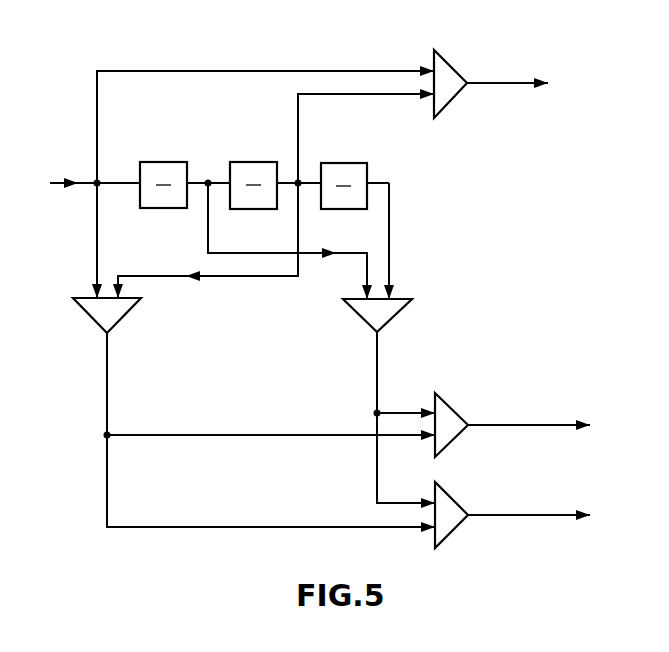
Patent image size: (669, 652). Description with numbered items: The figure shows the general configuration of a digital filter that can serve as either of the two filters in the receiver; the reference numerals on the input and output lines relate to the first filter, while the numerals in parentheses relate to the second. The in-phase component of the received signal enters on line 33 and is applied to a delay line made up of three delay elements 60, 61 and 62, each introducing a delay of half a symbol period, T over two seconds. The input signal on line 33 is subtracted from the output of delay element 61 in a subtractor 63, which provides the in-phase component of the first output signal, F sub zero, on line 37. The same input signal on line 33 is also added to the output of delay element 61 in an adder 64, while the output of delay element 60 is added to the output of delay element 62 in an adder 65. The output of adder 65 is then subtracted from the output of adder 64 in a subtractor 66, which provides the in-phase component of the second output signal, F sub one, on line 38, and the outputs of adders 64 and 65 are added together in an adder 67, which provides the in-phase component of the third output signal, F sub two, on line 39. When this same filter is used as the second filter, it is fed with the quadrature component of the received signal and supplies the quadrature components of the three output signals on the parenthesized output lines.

The line 33 is at (60, 184).
The delay element 60 is at (167, 151).
The delay element 61 is at (248, 161).
The delay element 62 is at (336, 162).
The subtractor 63 is at (450, 64).
The adder 64 is at (118, 324).
The adder 65 is at (362, 319).
The subtractor 66 is at (456, 500).
The adder 67 is at (452, 407).
The line 37 is at (490, 82).
The line 38 is at (495, 514).
The line 39 is at (498, 424).